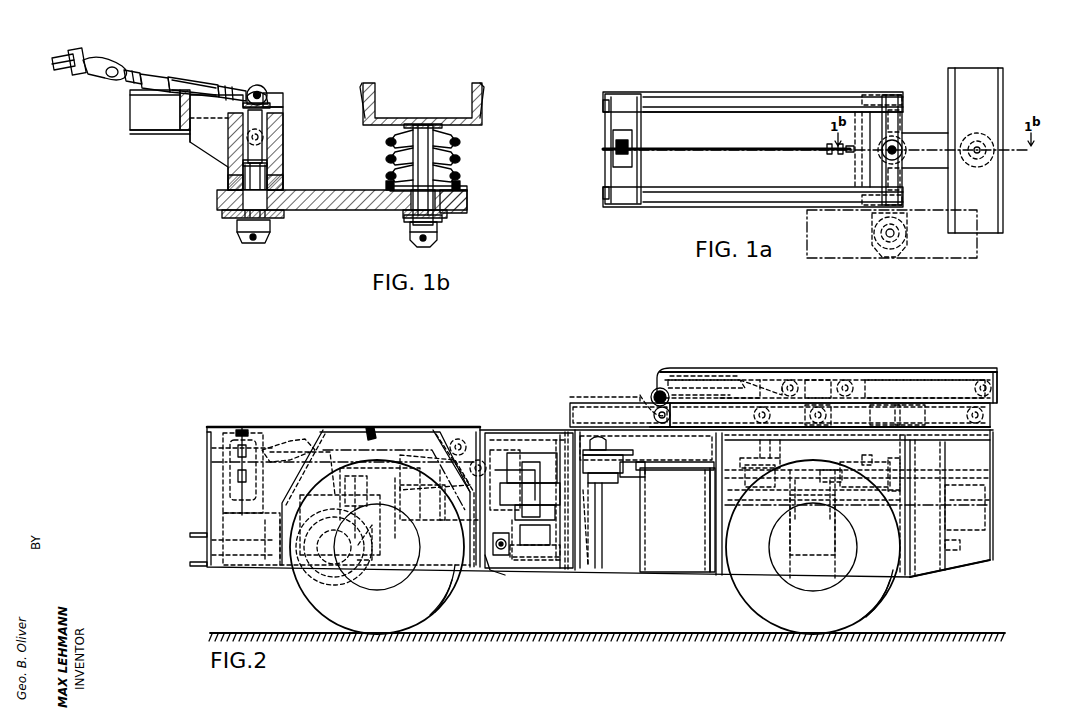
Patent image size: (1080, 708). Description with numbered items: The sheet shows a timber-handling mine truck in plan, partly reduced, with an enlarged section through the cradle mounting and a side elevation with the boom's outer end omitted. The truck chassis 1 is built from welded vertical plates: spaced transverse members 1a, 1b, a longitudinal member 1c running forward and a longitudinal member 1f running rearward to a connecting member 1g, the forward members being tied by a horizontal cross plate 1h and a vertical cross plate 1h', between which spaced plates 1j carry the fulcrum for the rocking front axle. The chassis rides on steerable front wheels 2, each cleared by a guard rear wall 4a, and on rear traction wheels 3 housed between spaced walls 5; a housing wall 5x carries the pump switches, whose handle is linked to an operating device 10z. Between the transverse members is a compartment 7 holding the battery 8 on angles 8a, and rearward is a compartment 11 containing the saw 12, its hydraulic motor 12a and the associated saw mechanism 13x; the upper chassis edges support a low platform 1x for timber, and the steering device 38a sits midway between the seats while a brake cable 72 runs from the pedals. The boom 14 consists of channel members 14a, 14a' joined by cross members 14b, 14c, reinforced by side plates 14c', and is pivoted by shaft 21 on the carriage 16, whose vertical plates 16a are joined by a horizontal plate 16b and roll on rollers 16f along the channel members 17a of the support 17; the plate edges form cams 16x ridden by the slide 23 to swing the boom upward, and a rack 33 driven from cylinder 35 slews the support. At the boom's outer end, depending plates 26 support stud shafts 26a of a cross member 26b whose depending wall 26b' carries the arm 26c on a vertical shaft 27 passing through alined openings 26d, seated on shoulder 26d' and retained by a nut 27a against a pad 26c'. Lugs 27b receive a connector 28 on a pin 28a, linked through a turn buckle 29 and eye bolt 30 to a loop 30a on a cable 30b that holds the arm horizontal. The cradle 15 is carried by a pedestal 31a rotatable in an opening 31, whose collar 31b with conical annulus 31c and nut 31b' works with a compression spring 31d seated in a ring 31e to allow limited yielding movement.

In FIG. 2, the truck chassis 1 is at (596, 589).
In FIG. 2, the transverse member 1a is at (566, 571).
In FIG. 2, the transverse member 1b is at (718, 518).
In FIG. 2, the longitudinal member 1c is at (752, 502).
In FIG. 2, the longitudinal member 1f is at (392, 433).
In FIG. 2, the connecting member 1g is at (206, 483).
In FIG. 2, the horizontal cross plate 1h is at (904, 519).
In FIG. 2, the vertical cross plate 1h' is at (965, 518).
In FIG. 2, the spaced plates 1j is at (836, 540).
In FIG. 2, the platform 1x is at (370, 430).
In FIG. 2, the front wheels 2 is at (750, 597).
In FIG. 2, the rear traction wheels 3 is at (305, 588).
In FIG. 2, the rear wall of guard 4a is at (912, 580).
In FIG. 2, the walls 5 is at (287, 567).
In FIG. 2, the housing wall 5x is at (448, 433).
In FIG. 2, the battery compartment 7 is at (722, 536).
In FIG. 2, the battery 8 is at (655, 572).
In FIG. 2, the angles 8a is at (710, 556).
In FIG. 2, the operating device 10z is at (500, 571).
In FIG. 2, the saw compartment 11 is at (520, 434).
In FIG. 2, the saw 12 is at (545, 453).
In FIG. 2, the hydraulically operated motor 12a is at (462, 486).
In FIG. 2, the bulkhead 13x is at (568, 440).
In FIG. 1A, the boom 14 is at (718, 216).
In FIG. 2, the boom 14 is at (928, 390).
In FIG. 1A, the channel member 14a is at (700, 149).
In FIG. 2, the channel member 14a is at (975, 374).
In FIG. 1B, the channel member 14a' is at (160, 141).
In FIG. 1A, the channel member 14a' is at (773, 113).
In FIG. 1B, the cross member 14b is at (190, 111).
In FIG. 1A, the cross member 14b is at (858, 174).
In FIG. 1A, the cross member 14c is at (642, 150).
In FIG. 1A, the side plates 14c' is at (643, 141).
In FIG. 1B, the cradle 15 is at (505, 103).
In FIG. 1A, the cradle 15 is at (1025, 215).
In FIG. 2, the carriage 16 is at (767, 364).
In FIG. 2, the vertical plates 16a is at (737, 385).
In FIG. 2, the horizontal plate 16b is at (695, 372).
In FIG. 2, the rollers 16f is at (648, 410).
In FIG. 2, the cams 16x is at (790, 378).
In FIG. 2, the support 17 is at (820, 415).
In FIG. 2, the channel members 17a is at (580, 408).
In FIG. 2, the shaft 21 is at (654, 392).
In FIG. 2, the slide 23 is at (820, 378).
In FIG. 1B, the depending plates 26 is at (198, 144).
In FIG. 1A, the depending plates 26 is at (904, 98).
In FIG. 1B, the stud shafts 26a is at (262, 136).
In FIG. 1A, the stud shafts 26a is at (900, 115).
In FIG. 1B, the cross member 26b is at (275, 151).
In FIG. 1A, the cross member 26b is at (900, 184).
In FIG. 1B, the depending wall 26b' is at (285, 190).
In FIG. 1B, the arm 26c is at (342, 215).
In FIG. 1A, the arm 26c is at (948, 138).
In FIG. 1B, the pad 26c' is at (234, 208).
In FIG. 1B, the alined openings 26d is at (235, 187).
In FIG. 1B, the shoulder 26d' is at (283, 170).
In FIG. 1B, the shaft 27 is at (230, 178).
In FIG. 1B, the nut 27a is at (268, 231).
In FIG. 1B, the lugs 27b is at (284, 100).
In FIG. 1A, the lugs 27b is at (903, 149).
In FIG. 1B, the connector 28 is at (254, 84).
In FIG. 1B, the pin 28a is at (261, 92).
In FIG. 1B, the turn buckle 29 is at (200, 76).
In FIG. 1B, the eye bolt 30 is at (136, 70).
In FIG. 1B, the loop 30a is at (116, 58).
In FIG. 1B, the cable 30b is at (55, 70).
In FIG. 1A, the cable 30b is at (765, 148).
In FIG. 1B, the opening 31 is at (403, 213).
In FIG. 1B, the pedestal 31a is at (448, 149).
In FIG. 1B, the collar 31b is at (396, 236).
In FIG. 1B, the nut 31b' is at (462, 231).
In FIG. 1B, the conical annulus 31c is at (468, 204).
In FIG. 1B, the coiled compression spring 31d is at (460, 134).
In FIG. 1B, the ring 31e is at (470, 188).
In FIG. 2, the rack 33 is at (805, 445).
In FIG. 2, the cylinder 35 is at (768, 445).
In FIG. 2, the steering device 38a is at (606, 451).
In FIG. 2, the cable 72 is at (340, 450).